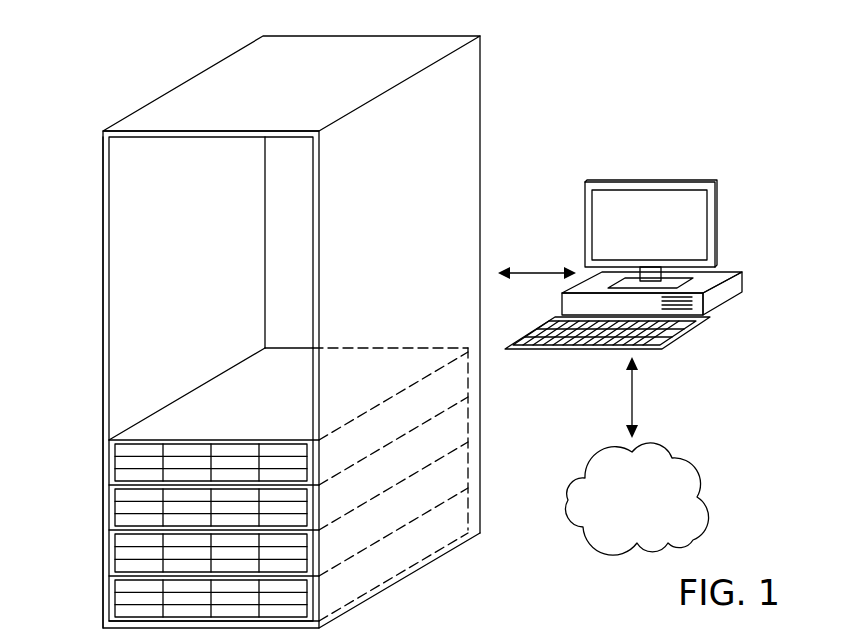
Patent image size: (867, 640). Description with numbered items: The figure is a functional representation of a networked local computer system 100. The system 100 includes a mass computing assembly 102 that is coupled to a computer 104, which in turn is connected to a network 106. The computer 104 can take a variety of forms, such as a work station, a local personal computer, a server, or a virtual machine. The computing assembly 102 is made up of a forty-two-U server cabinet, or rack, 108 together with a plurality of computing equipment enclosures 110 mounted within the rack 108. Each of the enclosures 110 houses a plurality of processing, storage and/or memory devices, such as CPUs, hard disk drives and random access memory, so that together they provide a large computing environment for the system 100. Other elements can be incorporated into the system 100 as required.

The networked local computer system 100 is at (77, 111).
The mass computing assembly 102 is at (214, 84).
The computer 104 is at (670, 178).
The network 106 is at (692, 458).
The server cabinet (rack) 108 is at (102, 333).
The computing equipment enclosures 110 is at (255, 400).